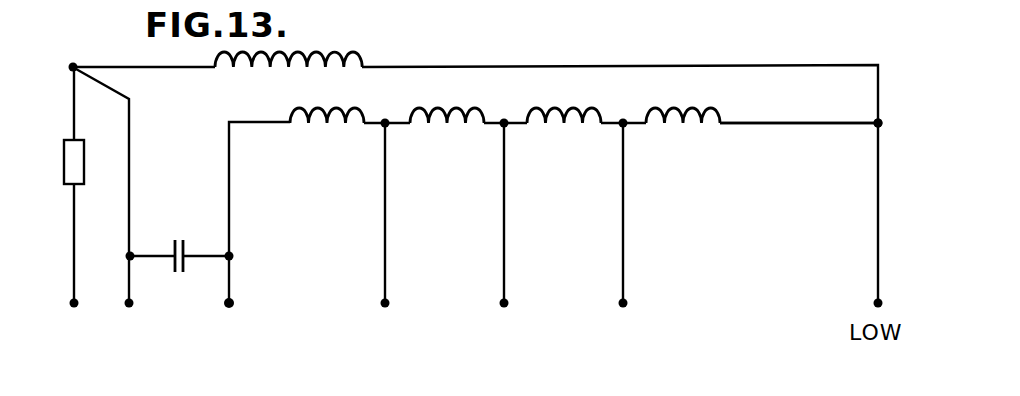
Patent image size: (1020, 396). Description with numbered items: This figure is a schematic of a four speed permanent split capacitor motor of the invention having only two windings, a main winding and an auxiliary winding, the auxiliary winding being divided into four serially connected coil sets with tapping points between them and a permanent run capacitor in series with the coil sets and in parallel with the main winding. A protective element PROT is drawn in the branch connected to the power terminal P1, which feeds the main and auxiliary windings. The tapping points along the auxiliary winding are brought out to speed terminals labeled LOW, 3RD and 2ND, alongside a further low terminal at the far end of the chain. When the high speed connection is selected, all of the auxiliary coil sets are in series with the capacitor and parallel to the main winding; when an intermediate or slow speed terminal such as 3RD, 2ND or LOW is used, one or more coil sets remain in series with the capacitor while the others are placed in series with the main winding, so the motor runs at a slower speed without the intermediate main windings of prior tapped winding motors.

The protective resistor PROT is at (62, 156).
The terminal P1 is at (135, 300).
The low band terminal LOW is at (394, 322).
The third band terminal 3RD is at (519, 322).
The second band terminal 2ND is at (638, 322).